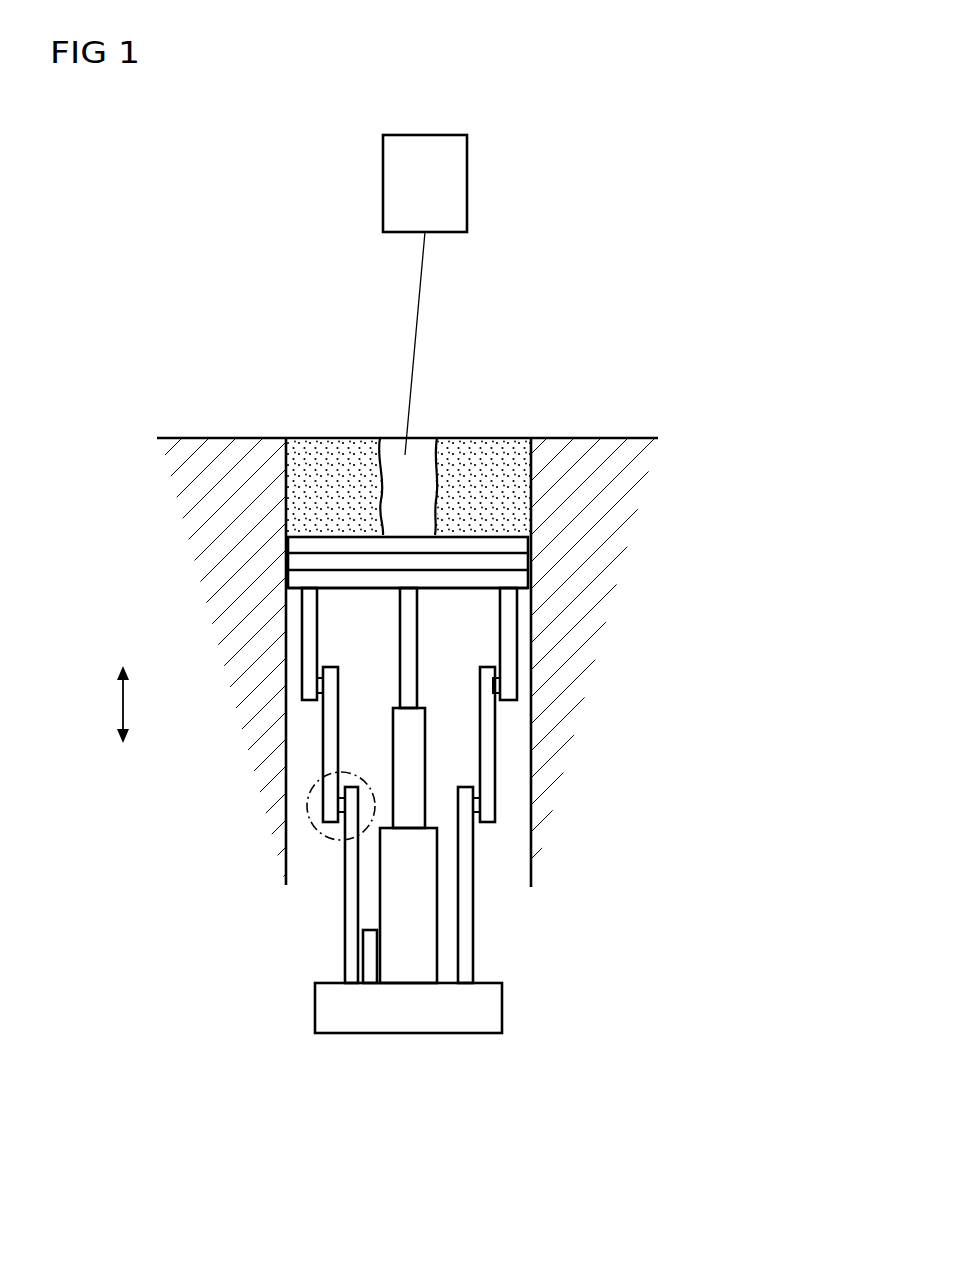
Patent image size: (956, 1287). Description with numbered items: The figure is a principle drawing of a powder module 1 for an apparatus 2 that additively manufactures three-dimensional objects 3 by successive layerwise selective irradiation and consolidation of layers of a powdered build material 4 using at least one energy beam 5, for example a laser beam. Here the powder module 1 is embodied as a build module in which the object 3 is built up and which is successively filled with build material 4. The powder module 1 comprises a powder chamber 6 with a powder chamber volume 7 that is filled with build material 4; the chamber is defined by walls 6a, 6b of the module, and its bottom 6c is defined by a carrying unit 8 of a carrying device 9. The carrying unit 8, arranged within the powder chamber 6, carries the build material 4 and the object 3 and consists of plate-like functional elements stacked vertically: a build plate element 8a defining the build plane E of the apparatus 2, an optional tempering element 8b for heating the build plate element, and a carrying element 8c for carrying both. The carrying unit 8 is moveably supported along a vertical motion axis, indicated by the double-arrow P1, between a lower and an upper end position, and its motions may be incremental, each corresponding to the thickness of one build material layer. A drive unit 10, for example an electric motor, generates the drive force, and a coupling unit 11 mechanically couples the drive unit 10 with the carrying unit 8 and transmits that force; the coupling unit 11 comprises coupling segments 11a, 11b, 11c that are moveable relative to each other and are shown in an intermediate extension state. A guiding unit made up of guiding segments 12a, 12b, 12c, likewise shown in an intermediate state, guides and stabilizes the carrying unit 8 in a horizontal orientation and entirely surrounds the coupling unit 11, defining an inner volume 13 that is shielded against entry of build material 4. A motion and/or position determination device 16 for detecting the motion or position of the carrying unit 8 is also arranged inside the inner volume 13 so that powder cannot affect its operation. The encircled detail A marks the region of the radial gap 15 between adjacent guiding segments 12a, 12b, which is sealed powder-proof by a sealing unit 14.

The powder module 1 is at (641, 636).
The apparatus 2 is at (634, 169).
The three-dimensional object 3 is at (399, 450).
The build material 4 is at (455, 452).
The energy beam 5 is at (424, 277).
The powder chamber 6 is at (270, 517).
The wall 6a is at (283, 455).
The wall 6b is at (531, 470).
The bottom 6c is at (317, 537).
The powder chamber volume 7 is at (497, 513).
The carrying unit 8 is at (547, 595).
The build plate element 8a is at (520, 548).
The tempering element 8b is at (520, 562).
The carrying element 8c is at (520, 578).
The carrying device 9 is at (507, 838).
The drive unit 10 is at (464, 1069).
The coupling unit 11 is at (375, 889).
The coupling segment 11a is at (423, 935).
The coupling segment 11b is at (415, 742).
The coupling segment 11c is at (411, 621).
The guiding segment 12a is at (343, 948).
The guiding segment 12b is at (323, 755).
The guiding segment 12c is at (300, 648).
The inner volume 13 is at (457, 715).
The sealing unit 14 is at (337, 833).
The radial gap 15 is at (344, 776).
The motion and/or position determination device 16 is at (370, 975).
The detail A is at (307, 812).
The build plane E is at (344, 386).
The double-arrow indicating motion axis P1 is at (121, 701).